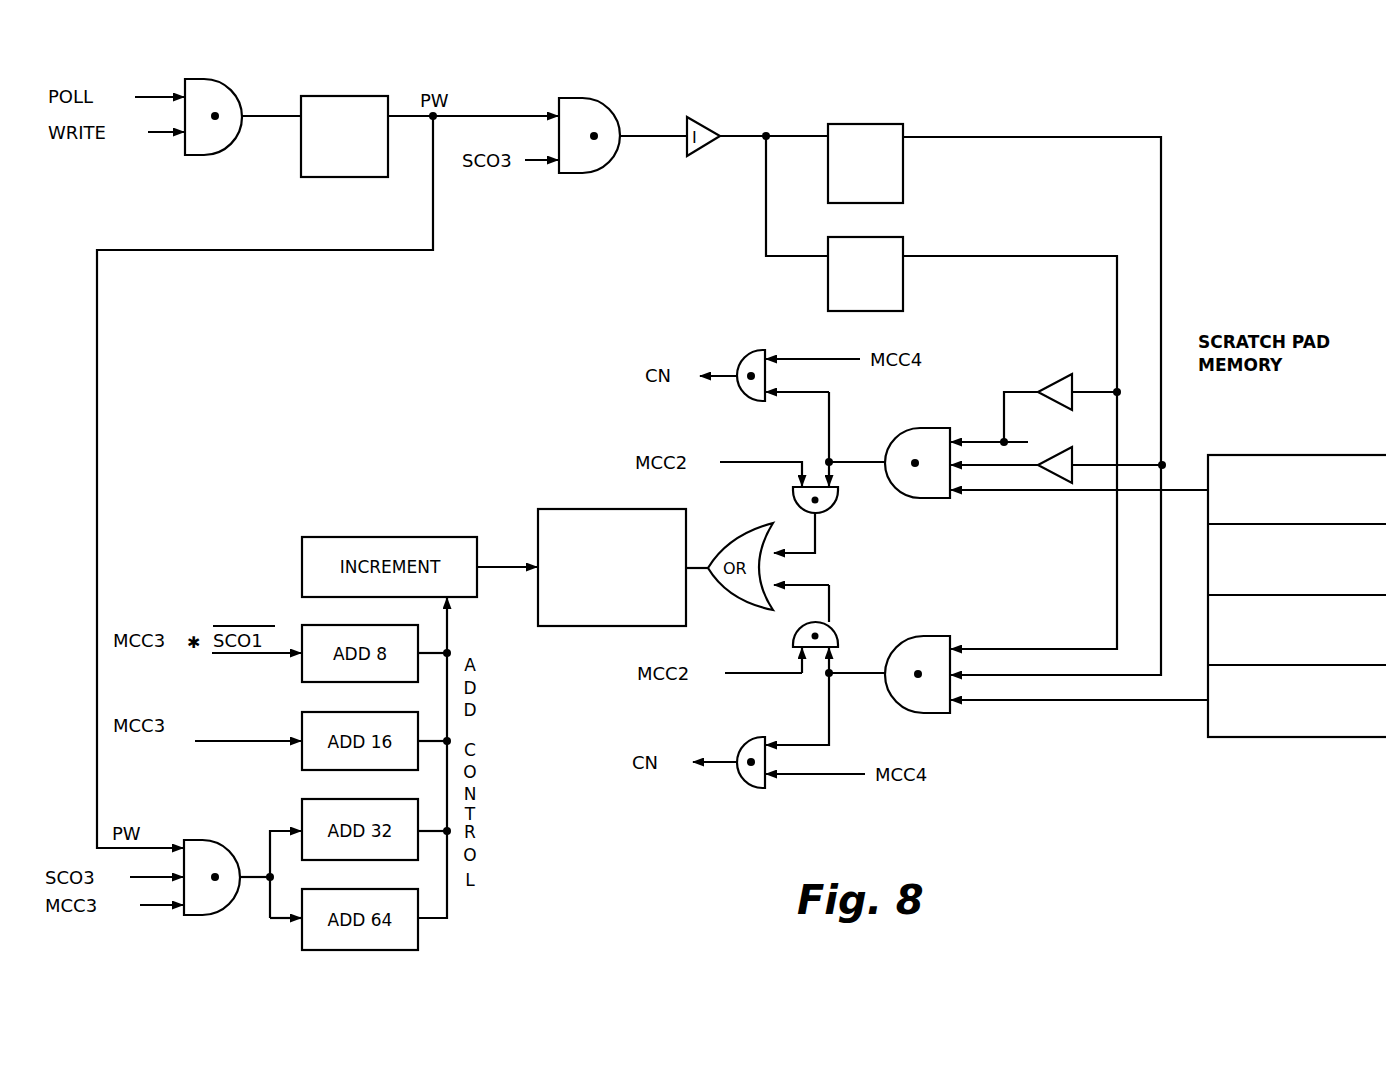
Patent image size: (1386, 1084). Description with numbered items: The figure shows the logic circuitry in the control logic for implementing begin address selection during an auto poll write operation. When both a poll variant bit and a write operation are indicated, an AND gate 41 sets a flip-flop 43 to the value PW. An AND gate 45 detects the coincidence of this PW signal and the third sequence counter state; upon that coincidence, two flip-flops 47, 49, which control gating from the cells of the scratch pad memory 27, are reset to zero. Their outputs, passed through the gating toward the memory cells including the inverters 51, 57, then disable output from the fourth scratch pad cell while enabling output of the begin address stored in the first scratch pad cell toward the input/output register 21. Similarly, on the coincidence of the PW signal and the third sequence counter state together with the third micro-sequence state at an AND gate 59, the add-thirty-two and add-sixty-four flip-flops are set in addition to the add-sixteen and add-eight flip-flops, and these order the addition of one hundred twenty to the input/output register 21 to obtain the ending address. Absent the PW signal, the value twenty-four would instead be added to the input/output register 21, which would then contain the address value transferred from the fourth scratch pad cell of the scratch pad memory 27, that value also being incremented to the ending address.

The AND gate 41 is at (232, 93).
The flip-flop 43 is at (364, 96).
The AND gate 45 is at (611, 112).
The flip-flop 47 is at (892, 124).
The flip-flop 49 is at (892, 237).
The inverter 51 is at (1062, 374).
The inverter 57 is at (1066, 450).
The AND gate 59 is at (199, 841).
The input/output register 21 is at (562, 509).
The scratch pad memory 27 is at (1317, 455).